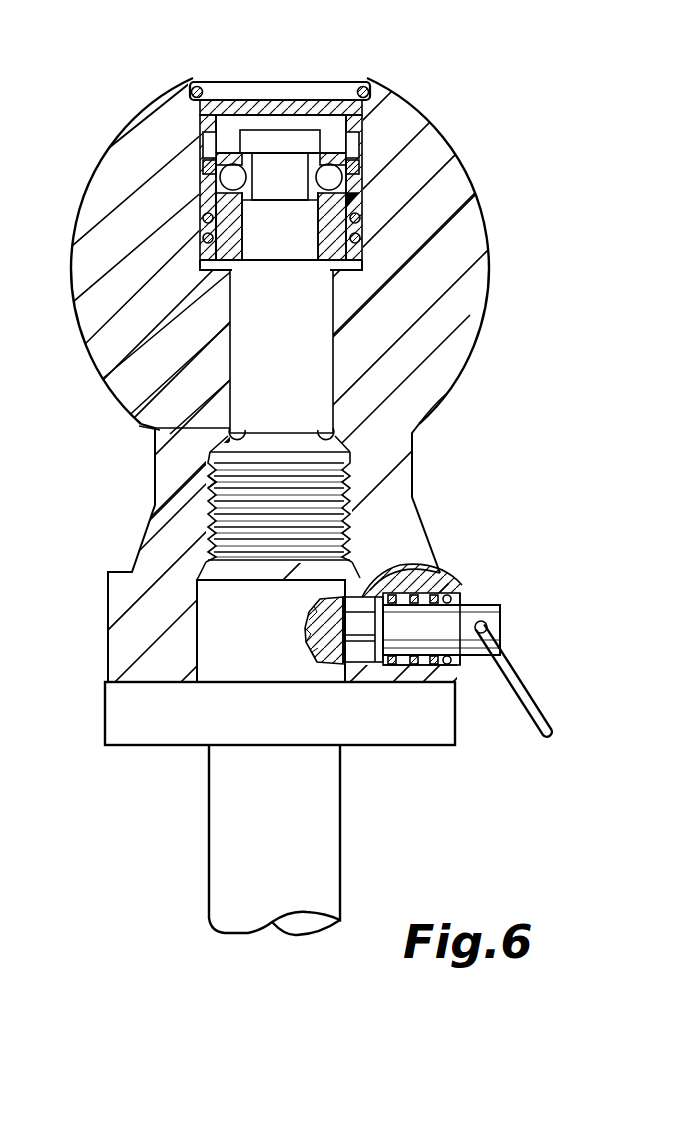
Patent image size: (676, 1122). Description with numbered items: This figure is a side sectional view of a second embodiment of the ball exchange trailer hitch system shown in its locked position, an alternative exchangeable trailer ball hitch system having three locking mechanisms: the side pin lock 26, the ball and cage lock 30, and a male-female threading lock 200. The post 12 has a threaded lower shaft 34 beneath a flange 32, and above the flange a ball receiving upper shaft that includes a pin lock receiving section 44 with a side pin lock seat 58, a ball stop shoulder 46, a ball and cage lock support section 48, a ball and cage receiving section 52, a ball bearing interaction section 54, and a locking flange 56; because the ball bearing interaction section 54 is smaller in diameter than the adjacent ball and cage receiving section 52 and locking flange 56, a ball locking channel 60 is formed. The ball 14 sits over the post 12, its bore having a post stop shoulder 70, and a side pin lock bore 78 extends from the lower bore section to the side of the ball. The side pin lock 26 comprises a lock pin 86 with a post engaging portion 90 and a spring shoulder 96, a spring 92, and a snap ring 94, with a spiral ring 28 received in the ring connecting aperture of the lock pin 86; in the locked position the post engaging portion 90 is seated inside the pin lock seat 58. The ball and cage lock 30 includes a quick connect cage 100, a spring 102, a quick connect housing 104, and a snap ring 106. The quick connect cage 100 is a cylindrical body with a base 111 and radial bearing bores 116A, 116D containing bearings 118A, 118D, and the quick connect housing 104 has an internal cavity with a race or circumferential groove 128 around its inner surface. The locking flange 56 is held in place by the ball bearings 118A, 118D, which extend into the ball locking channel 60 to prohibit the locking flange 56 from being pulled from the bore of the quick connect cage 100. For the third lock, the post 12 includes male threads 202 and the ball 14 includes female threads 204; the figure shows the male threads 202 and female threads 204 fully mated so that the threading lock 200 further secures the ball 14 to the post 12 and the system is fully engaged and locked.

The post 12 is at (191, 751).
The ball 14 is at (486, 201).
The side pin lock 26 is at (506, 632).
The spiral ring 28 is at (527, 690).
The ball and cage lock 30 is at (298, 74).
The flange 32 is at (348, 722).
The threaded lower shaft 34 is at (296, 800).
The pin lock receiving section 44 is at (250, 627).
The ball stop shoulder 46 is at (416, 429).
The ball and cage lock support section 48 is at (308, 363).
The ball and cage receiving section 52 is at (296, 242).
The ball bearing interaction section 54 is at (300, 190).
The locking flange 56 is at (300, 140).
The side pin lock seat 58 is at (333, 618).
The ball locking channel 60 is at (305, 207).
The post stop shoulder 70 is at (140, 428).
The side pin lock bore 78 is at (405, 663).
The lock pin 86 is at (445, 626).
The post engaging portion 90 is at (405, 555).
The spring 92 is at (452, 582).
The snap ring 94 is at (458, 597).
The spring shoulder 96 is at (420, 562).
The quick connect cage 100 is at (368, 226).
The spring 102 is at (203, 216).
The quick connect housing 104 is at (368, 110).
The snap ring 106 is at (240, 90).
The base 111 is at (203, 240).
The bearing bore 116A is at (203, 165).
The bearing bore 116D is at (362, 200).
The bearing 118A is at (203, 142).
The bearing 118D is at (360, 145).
The race or circumferential groove 128 is at (205, 128).
The male-female threading lock 200 is at (360, 512).
The male threads 202 is at (356, 470).
The female threads 204 is at (447, 394).